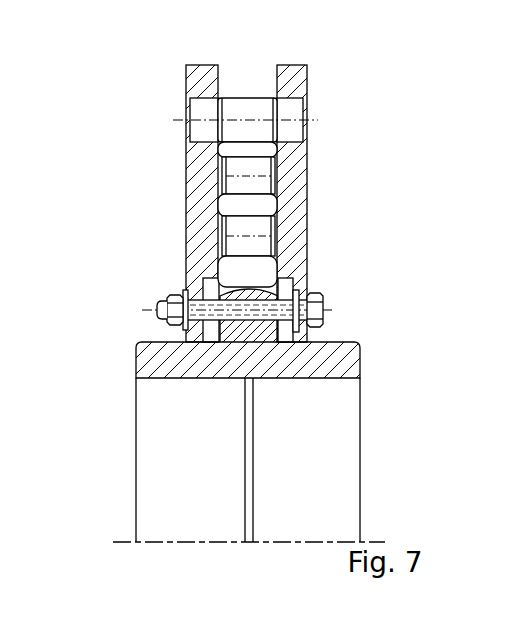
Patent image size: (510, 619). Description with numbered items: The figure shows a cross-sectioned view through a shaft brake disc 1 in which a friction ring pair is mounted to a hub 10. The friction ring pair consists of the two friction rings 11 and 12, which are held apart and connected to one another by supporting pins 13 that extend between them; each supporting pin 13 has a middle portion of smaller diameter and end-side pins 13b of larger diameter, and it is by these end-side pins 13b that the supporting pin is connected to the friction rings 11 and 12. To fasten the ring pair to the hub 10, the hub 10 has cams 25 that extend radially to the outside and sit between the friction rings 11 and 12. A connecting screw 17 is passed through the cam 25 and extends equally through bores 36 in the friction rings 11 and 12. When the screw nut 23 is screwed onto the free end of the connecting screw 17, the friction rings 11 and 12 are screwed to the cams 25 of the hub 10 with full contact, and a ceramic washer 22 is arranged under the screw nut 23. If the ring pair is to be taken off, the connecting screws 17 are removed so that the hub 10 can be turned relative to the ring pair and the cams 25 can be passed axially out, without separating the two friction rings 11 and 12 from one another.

The shaft brake disc 1 is at (103, 159).
The hub 10 is at (136, 450).
The friction ring 11 is at (302, 65).
The friction ring 12 is at (193, 65).
The supporting pin 13 is at (245, 108).
The end-side pin 13b is at (207, 117).
The connecting screw 17 is at (320, 307).
The ceramic washer 22 is at (184, 290).
The screw nut 23 is at (160, 298).
The cam 25 is at (258, 288).
The bore 36 is at (202, 279).